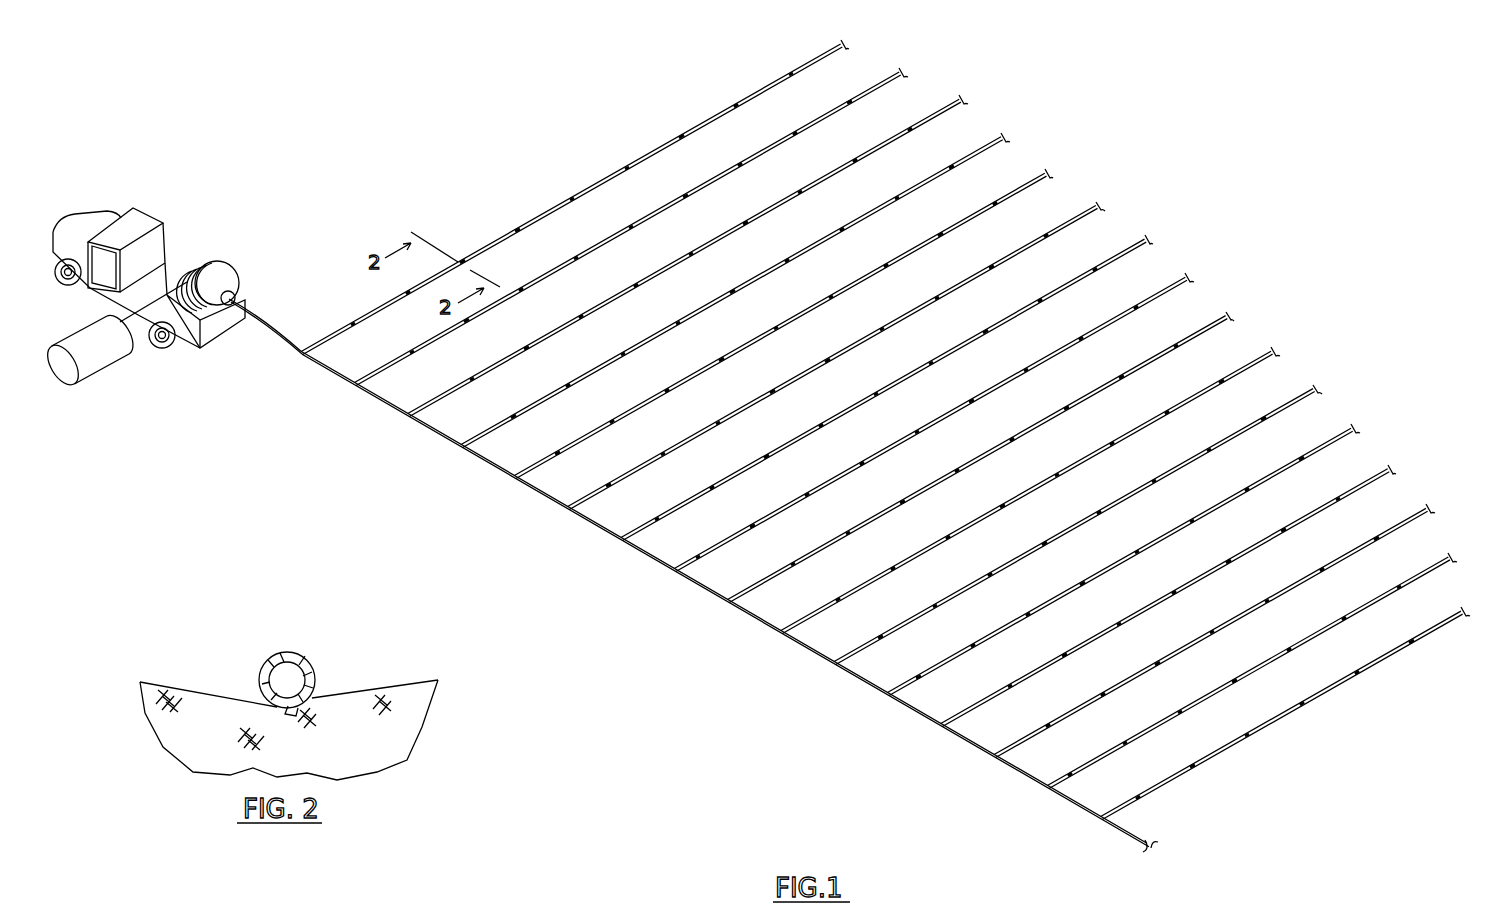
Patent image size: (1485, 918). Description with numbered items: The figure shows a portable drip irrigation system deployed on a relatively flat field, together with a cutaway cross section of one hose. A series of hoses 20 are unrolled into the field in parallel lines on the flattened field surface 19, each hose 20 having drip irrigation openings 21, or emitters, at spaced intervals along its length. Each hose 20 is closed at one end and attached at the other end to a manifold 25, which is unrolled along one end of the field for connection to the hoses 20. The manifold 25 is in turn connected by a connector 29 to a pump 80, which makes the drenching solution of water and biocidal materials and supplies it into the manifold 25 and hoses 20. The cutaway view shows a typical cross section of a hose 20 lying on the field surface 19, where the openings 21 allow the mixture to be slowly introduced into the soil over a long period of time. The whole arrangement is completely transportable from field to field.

In FIG. 2, the field surface 19 is at (202, 683).
In FIG. 1, the hose 20 is at (825, 52).
In FIG. 2, the hose 20 is at (308, 667).
In FIG. 1, the drip irrigation opening 21 is at (788, 76).
In FIG. 2, the drip irrigation opening 21 is at (303, 722).
In FIG. 1, the manifold 25 is at (338, 375).
In FIG. 1, the connector 29 is at (130, 322).
In FIG. 1, the pump 80 is at (98, 362).